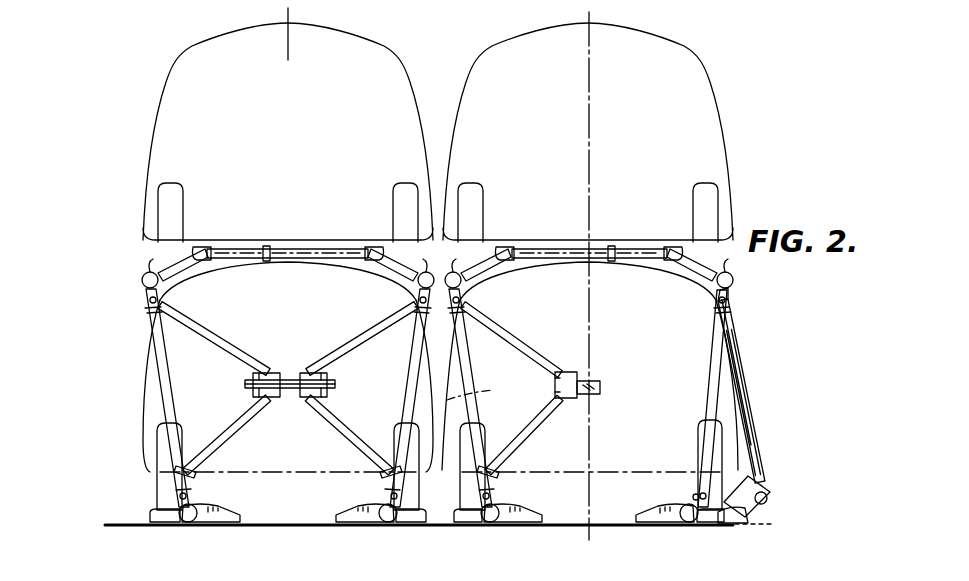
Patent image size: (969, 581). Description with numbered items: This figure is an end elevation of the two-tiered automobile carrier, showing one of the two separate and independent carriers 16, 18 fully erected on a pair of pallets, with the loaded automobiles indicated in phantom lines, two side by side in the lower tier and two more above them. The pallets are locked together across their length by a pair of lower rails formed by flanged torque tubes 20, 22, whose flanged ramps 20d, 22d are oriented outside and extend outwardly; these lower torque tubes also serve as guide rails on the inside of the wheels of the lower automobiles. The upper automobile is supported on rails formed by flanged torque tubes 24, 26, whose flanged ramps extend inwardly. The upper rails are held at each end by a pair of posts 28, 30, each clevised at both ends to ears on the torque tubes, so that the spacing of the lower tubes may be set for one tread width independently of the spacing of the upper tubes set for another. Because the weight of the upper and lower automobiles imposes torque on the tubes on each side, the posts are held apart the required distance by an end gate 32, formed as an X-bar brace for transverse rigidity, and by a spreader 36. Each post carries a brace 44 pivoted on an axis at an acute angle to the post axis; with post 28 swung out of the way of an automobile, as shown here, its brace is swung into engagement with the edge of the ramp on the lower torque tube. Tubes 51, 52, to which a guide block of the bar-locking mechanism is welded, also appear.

The carrier 16 is at (749, 360).
The carrier 18 is at (140, 380).
The flanged torque tube 20 is at (670, 506).
The flanged ramp 20d is at (713, 524).
The flanged torque tube 22 is at (506, 506).
The flanged ramp 22d is at (472, 523).
The flanged torque tube 24 is at (734, 280).
The flanged torque tube 26 is at (486, 296).
The post 28 is at (470, 385).
The post 30 is at (758, 437).
The end gate 32 is at (618, 270).
The spreader 36 is at (563, 249).
The brace 44 is at (746, 504).
The tube 51 is at (524, 344).
The tube 52 is at (527, 437).